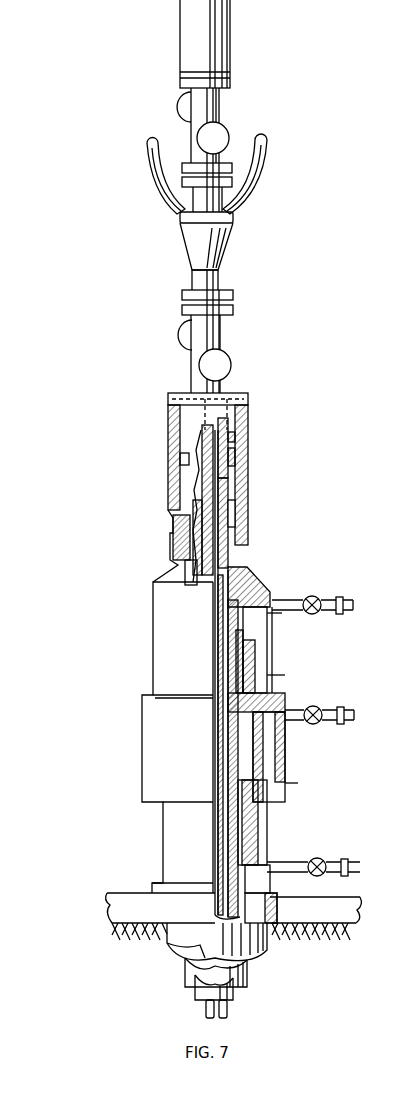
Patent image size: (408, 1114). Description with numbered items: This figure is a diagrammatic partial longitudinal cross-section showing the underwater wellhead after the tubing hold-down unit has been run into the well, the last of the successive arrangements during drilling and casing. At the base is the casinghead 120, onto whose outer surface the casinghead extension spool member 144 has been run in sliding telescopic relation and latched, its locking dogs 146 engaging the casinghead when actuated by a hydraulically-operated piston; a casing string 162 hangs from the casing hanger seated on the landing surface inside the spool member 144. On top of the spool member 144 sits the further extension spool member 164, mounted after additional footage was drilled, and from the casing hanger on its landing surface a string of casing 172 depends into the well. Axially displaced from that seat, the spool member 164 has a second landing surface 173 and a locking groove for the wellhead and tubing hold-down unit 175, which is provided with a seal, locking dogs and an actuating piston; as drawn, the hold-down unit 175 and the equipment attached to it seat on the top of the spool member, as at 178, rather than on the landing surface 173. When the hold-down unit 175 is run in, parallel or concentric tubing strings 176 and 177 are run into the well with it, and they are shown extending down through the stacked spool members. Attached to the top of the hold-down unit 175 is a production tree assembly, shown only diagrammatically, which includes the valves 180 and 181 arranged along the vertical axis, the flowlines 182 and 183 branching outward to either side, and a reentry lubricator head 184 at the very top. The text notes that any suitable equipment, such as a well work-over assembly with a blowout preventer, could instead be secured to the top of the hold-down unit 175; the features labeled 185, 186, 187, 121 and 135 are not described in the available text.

The reentry lubricator head 184 is at (190, 31).
The valve 181 is at (203, 134).
The flowline 183 is at (162, 164).
The flowline 182 is at (250, 181).
The valve 180 is at (207, 363).
The top of the spool member 178 is at (186, 409).
The seal element 185 is at (233, 445).
The seal element 186 is at (236, 461).
The inner sleeve 187 is at (226, 478).
The wellhead and tubing hold-down unit 175 is at (232, 494).
The second landing surface 173 is at (233, 500).
The tubing string 177 is at (240, 530).
The tubing string 176 is at (222, 570).
The extension spool member 164 is at (262, 581).
The extension spool member 144 is at (275, 703).
The locking dogs 146 is at (270, 766).
The casinghead 120 is at (265, 849).
The conductor casing 121 is at (252, 943).
The surface casing 135 is at (236, 969).
The casing string 162 is at (196, 975).
The string of casing 172 is at (197, 993).